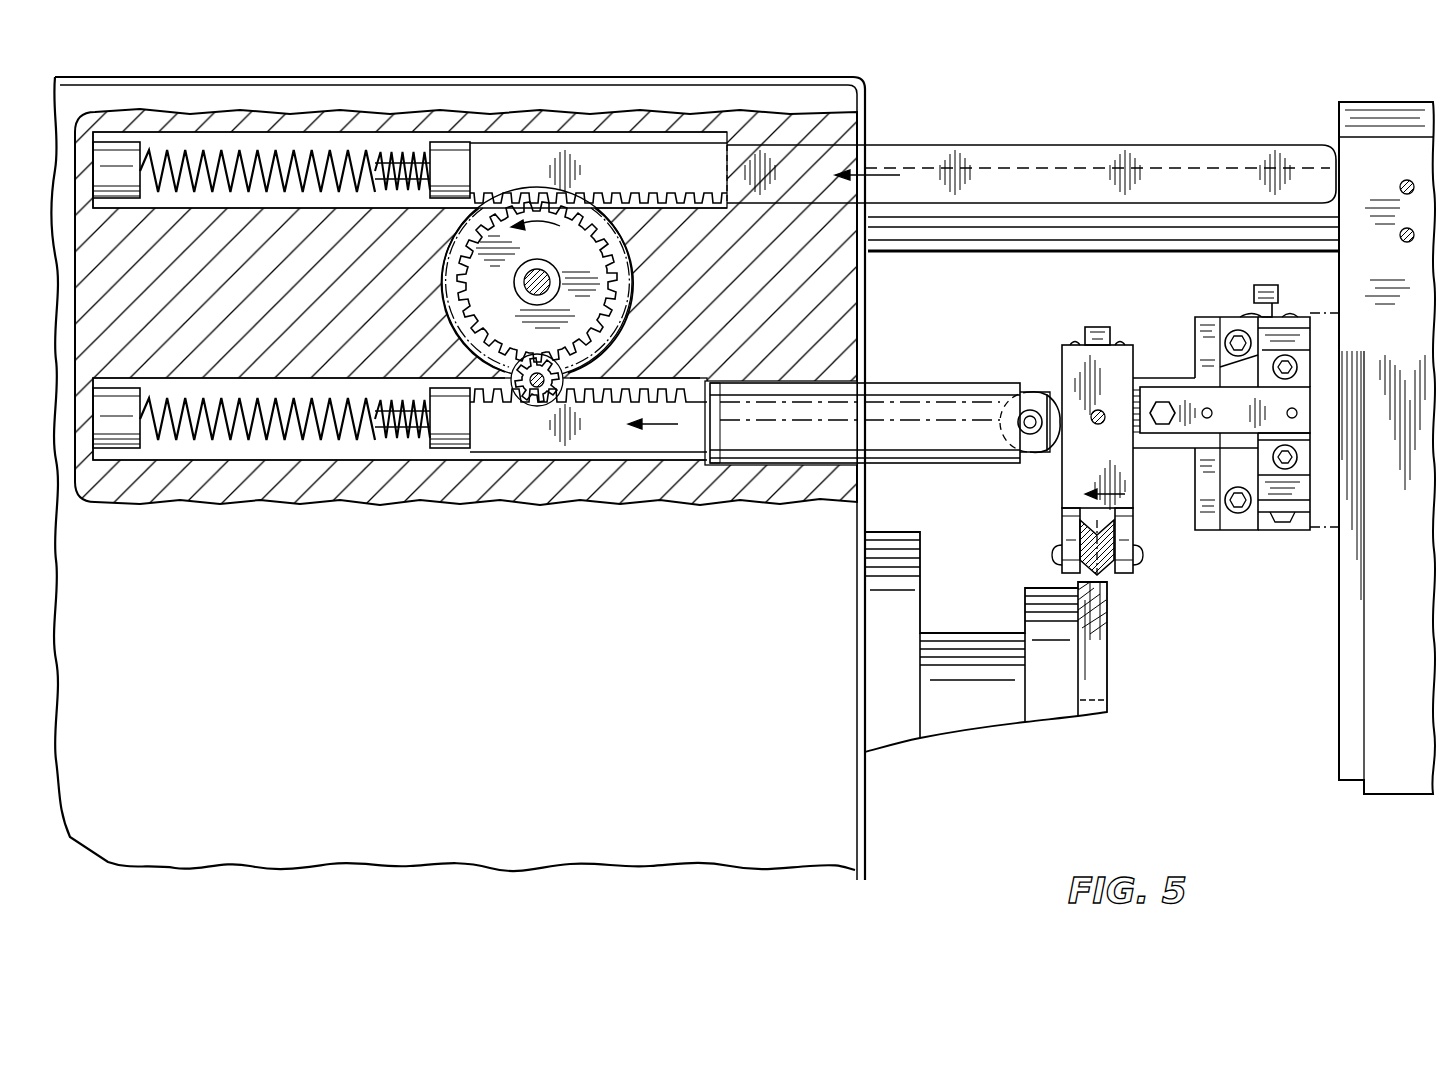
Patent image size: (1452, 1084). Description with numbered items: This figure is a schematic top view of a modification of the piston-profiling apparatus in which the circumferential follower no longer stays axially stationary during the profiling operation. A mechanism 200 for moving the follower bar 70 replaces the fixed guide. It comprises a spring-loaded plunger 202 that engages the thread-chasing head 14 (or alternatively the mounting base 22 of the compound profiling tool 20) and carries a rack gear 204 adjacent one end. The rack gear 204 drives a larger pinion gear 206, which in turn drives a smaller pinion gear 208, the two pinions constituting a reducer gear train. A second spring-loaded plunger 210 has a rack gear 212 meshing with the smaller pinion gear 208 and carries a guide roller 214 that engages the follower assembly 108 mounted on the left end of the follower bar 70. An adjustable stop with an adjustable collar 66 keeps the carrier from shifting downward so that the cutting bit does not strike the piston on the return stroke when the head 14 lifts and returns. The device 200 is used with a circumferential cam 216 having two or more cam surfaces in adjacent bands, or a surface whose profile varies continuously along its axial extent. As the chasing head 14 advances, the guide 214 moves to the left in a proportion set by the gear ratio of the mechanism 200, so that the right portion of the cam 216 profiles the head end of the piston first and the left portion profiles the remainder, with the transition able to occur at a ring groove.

The thread-chasing head 14 is at (1336, 120).
The compound profiling tool 20 is at (1293, 532).
The mounting base 22 is at (1206, 532).
The adjustable collar 66 is at (1256, 290).
The follower bar 70 is at (1163, 378).
The follower assembly 108 is at (1062, 350).
The mechanism for moving the follower bar 200 is at (937, 142).
The spring-loaded plunger 202 is at (1047, 152).
The rack gear 204 is at (652, 210).
The larger pinion gear 206 is at (472, 294).
The smaller pinion gear 208 is at (525, 388).
The second spring-loaded plunger 210 is at (793, 440).
The rack gear 212 is at (640, 400).
The guide roller 214 is at (1057, 399).
The circumferential cam 216 is at (1100, 621).